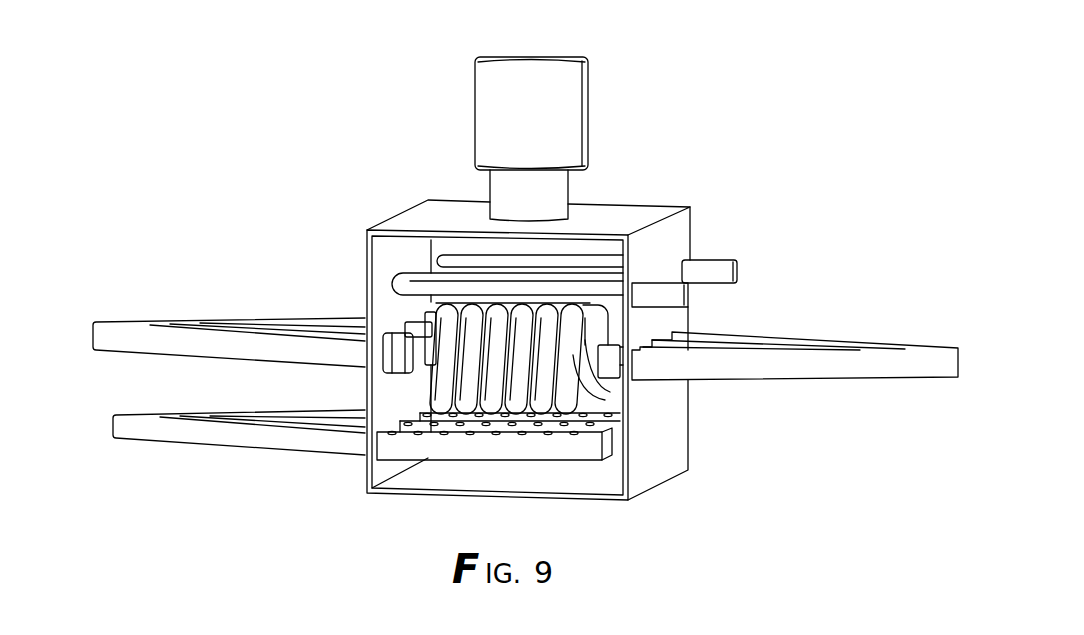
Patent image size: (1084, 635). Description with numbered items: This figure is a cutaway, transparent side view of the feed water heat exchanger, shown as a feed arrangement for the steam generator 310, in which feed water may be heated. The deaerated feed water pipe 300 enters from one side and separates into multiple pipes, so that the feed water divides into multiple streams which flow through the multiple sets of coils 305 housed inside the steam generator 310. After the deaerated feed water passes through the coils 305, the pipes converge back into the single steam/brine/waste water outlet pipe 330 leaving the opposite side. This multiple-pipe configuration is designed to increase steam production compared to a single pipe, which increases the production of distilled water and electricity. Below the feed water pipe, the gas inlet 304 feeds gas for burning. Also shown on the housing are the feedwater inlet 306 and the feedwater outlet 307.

The deaerated feed water pipe 300 is at (114, 321).
The gas inlet 304 is at (137, 440).
The coils 305 is at (575, 373).
The feedwater inlet 306 is at (725, 258).
The feedwater outlet 307 is at (672, 306).
The steam generator 310 is at (397, 219).
The steam/brine/waste water outlet pipe 330 is at (857, 365).